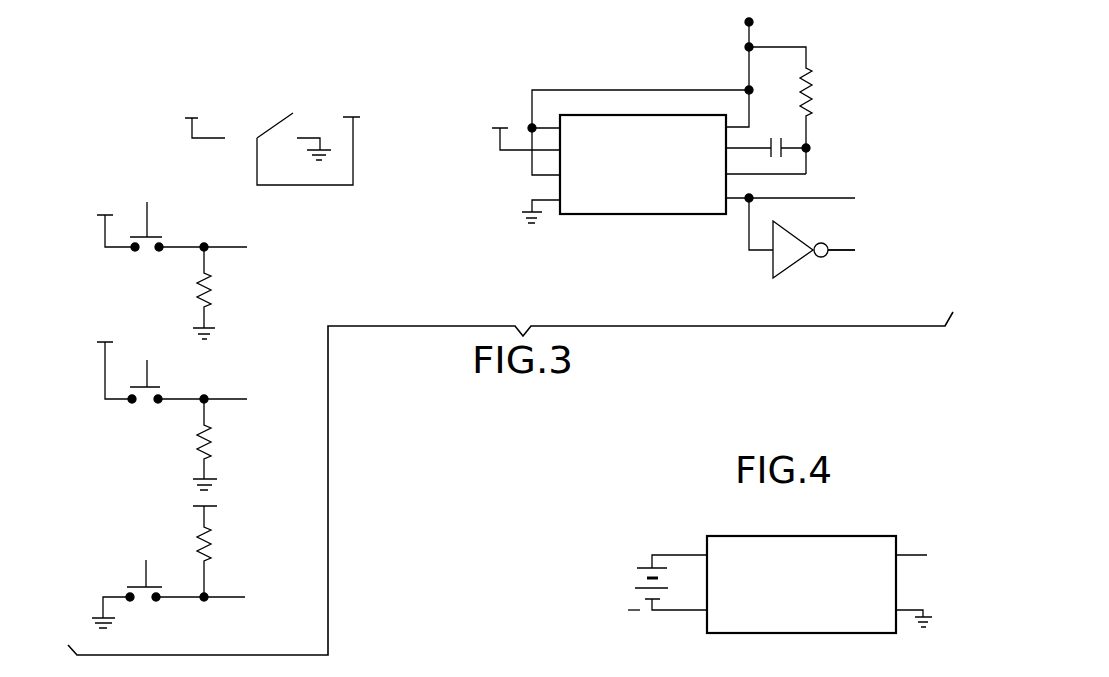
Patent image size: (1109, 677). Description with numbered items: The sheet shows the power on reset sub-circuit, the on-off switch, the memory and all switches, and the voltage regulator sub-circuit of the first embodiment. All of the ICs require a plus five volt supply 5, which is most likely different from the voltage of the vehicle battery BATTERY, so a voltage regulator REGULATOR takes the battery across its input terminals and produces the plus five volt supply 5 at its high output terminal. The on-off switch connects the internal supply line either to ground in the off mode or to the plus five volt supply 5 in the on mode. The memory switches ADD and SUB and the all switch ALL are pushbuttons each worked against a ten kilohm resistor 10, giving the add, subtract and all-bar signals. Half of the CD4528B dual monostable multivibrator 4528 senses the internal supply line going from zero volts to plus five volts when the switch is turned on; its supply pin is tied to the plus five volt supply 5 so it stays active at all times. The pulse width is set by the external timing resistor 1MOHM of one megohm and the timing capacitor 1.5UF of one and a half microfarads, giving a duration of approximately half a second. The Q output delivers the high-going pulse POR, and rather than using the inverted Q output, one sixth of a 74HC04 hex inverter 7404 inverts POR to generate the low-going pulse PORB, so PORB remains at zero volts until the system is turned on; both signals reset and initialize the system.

In FIG. 3, the +5 V supply 5 is at (265, 130).
In FIG. 3, the ADD switch ADD is at (193, 216).
In FIG. 3, the SUB switch SUB is at (190, 376).
In FIG. 3, the ALL switch ALL is at (198, 583).
In FIG. 3, the 10 kOhm resistors 10 is at (246, 422).
In FIG. 3, the CD4528B dual monostable multivibrator 4528 is at (649, 120).
In FIG. 3, the timing resistor 1MOHM is at (819, 110).
In FIG. 3, the timing capacitor 1.5UF is at (781, 125).
In FIG. 3, the power on reset pulse POR is at (816, 200).
In FIG. 3, the 74HC04 hex inverter 7404 is at (802, 256).
In FIG. 3, the inverted power on reset pulse PORB is at (874, 251).
In FIG. 4, the voltage regulator REGULATOR is at (841, 584).
In FIG. 4, the vehicle battery BATTERY is at (602, 576).